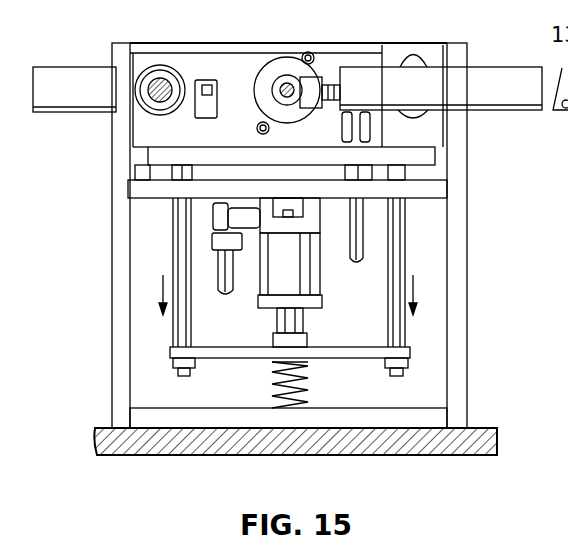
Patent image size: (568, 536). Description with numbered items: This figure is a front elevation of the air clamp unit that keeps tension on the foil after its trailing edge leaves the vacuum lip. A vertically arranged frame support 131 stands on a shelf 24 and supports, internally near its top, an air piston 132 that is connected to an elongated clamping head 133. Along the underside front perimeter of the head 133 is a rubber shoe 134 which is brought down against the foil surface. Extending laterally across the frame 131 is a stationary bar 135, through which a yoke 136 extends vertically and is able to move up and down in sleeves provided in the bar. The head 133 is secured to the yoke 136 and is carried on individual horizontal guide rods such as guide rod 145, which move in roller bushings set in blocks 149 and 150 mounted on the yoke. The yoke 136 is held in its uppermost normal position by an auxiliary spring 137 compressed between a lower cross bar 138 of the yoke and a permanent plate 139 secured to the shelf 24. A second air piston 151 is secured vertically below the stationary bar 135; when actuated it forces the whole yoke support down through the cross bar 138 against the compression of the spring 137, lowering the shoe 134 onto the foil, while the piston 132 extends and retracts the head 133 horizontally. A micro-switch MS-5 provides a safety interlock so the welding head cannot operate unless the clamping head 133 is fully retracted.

The frame support 131 is at (468, 322).
The shelf 24 is at (477, 427).
The permanent plate 139 is at (380, 408).
The block 149 is at (182, 43).
The guide rod 145 is at (160, 100).
The micro-switch MS-5 is at (213, 105).
The air piston 132 is at (290, 113).
The clamping head 133 is at (477, 73).
The rubber shoe 134 is at (488, 113).
The block 150 is at (423, 48).
The stationary bar 135 is at (440, 187).
The yoke 136 is at (412, 263).
The air piston 151 is at (310, 277).
The lower cross bar 138 is at (323, 352).
The auxiliary spring 137 is at (303, 390).